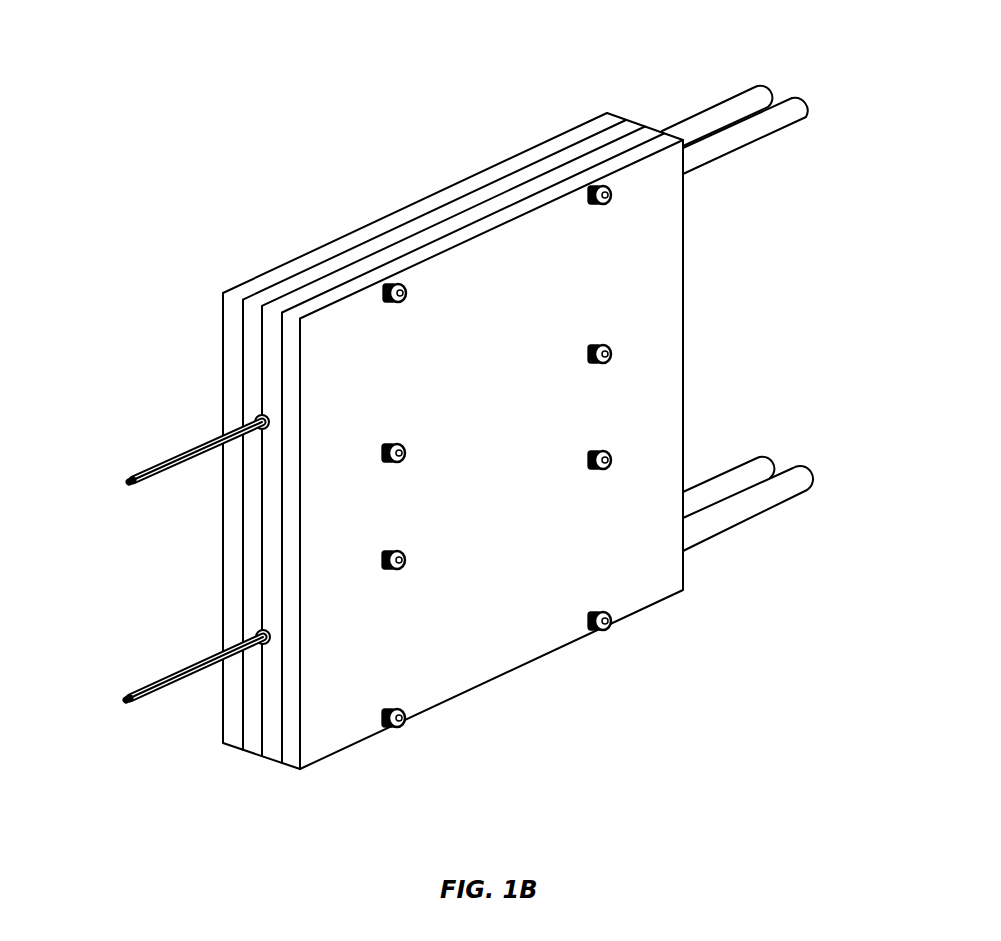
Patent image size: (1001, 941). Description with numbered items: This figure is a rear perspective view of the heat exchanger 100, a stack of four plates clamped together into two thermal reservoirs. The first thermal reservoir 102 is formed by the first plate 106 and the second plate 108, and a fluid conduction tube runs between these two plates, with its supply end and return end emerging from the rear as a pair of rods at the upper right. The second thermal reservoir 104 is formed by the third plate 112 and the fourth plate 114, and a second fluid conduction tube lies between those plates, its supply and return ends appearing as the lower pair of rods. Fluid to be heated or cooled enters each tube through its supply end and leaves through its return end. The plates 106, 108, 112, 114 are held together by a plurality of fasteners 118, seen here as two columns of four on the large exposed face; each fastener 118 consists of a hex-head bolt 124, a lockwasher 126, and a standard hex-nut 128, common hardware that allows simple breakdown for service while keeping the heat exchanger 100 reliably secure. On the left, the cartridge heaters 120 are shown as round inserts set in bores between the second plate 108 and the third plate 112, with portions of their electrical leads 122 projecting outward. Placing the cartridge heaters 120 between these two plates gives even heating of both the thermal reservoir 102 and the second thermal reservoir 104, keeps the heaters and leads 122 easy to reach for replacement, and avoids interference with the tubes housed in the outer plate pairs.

The heat exchanger 100 is at (475, 422).
The first thermal reservoir 102 is at (423, 432).
The second thermal reservoir 104 is at (648, 118).
The first plate 106 is at (553, 294).
The second plate 108 is at (283, 307).
The third plate 112 is at (548, 165).
The fourth plate 114 is at (413, 210).
The fasteners 118 is at (469, 456).
The cartridge heaters 120 is at (150, 557).
The electrical leads 122 is at (81, 590).
The hex-head bolt 124 is at (405, 303).
The lockwasher 126 is at (385, 303).
The hex-nut 128 is at (307, 253).